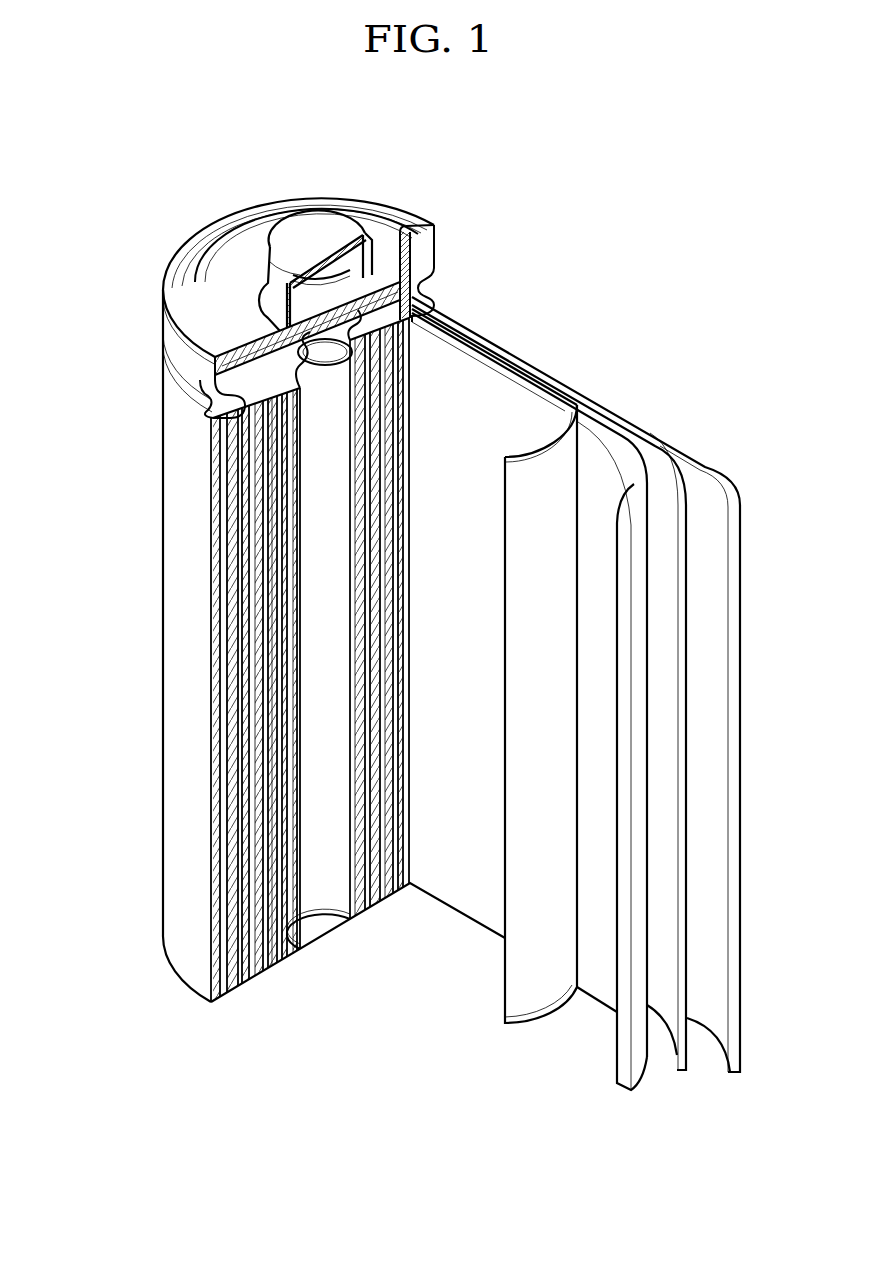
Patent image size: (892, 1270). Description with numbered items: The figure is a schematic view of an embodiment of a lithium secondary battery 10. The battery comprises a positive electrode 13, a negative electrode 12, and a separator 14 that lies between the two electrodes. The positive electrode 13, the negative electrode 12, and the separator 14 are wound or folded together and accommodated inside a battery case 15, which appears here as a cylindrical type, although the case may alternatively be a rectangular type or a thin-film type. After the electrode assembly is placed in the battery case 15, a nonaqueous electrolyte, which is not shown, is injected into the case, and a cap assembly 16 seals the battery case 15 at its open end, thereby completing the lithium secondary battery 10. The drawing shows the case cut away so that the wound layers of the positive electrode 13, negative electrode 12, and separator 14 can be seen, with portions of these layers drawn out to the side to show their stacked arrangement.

The lithium secondary battery 10 is at (652, 134).
The negative electrode 12 is at (727, 487).
The positive electrode 13 is at (600, 432).
The separator 14 is at (512, 377).
The battery case 15 is at (176, 645).
The cap assembly 16 is at (300, 244).